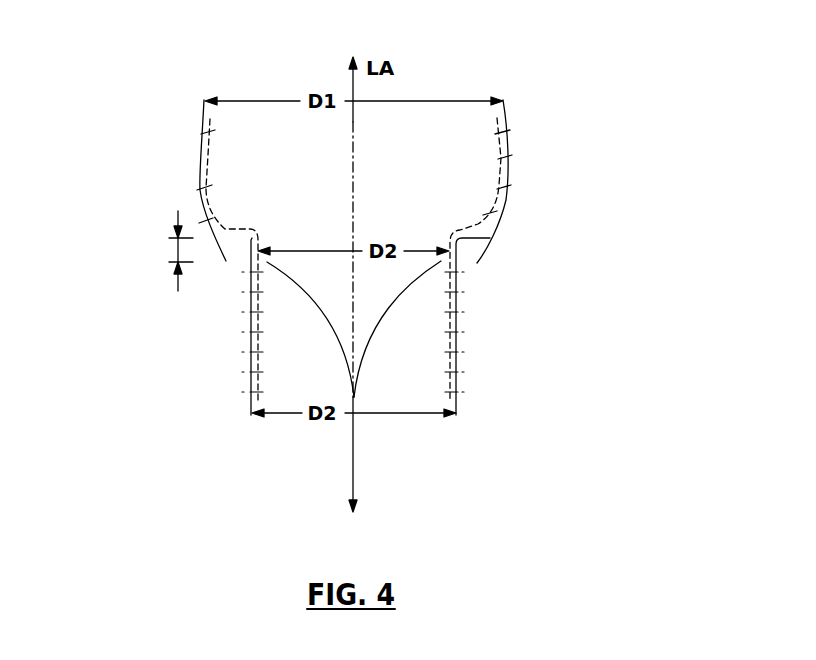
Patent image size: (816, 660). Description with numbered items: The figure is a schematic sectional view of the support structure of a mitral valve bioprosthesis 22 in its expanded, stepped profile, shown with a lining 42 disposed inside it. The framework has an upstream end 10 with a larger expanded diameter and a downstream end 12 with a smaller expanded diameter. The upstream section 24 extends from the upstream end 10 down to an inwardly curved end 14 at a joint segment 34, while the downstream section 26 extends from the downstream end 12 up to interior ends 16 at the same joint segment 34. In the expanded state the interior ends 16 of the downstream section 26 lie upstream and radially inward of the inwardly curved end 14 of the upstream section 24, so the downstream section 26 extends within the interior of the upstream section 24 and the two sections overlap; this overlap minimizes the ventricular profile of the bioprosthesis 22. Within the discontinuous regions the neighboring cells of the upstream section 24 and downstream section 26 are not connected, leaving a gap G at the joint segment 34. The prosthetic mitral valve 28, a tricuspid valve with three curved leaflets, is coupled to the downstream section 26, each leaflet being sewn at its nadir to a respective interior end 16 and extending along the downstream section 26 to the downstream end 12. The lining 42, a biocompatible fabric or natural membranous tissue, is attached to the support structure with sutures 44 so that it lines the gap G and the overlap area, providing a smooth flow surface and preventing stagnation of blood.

The upstream end 10 is at (204, 100).
The downstream end 12 is at (457, 413).
The inwardly curved end 14 is at (226, 261).
The interior ends 16 is at (252, 238).
The mitral valve bioprosthesis 22 is at (592, 226).
The upstream section 24 is at (504, 104).
The downstream section 26 is at (457, 337).
The prosthetic mitral valve 28 is at (360, 365).
The joint segment 34 is at (176, 245).
The lining 42 is at (210, 202).
The sutures 44 is at (212, 157).
The gap G is at (470, 258).